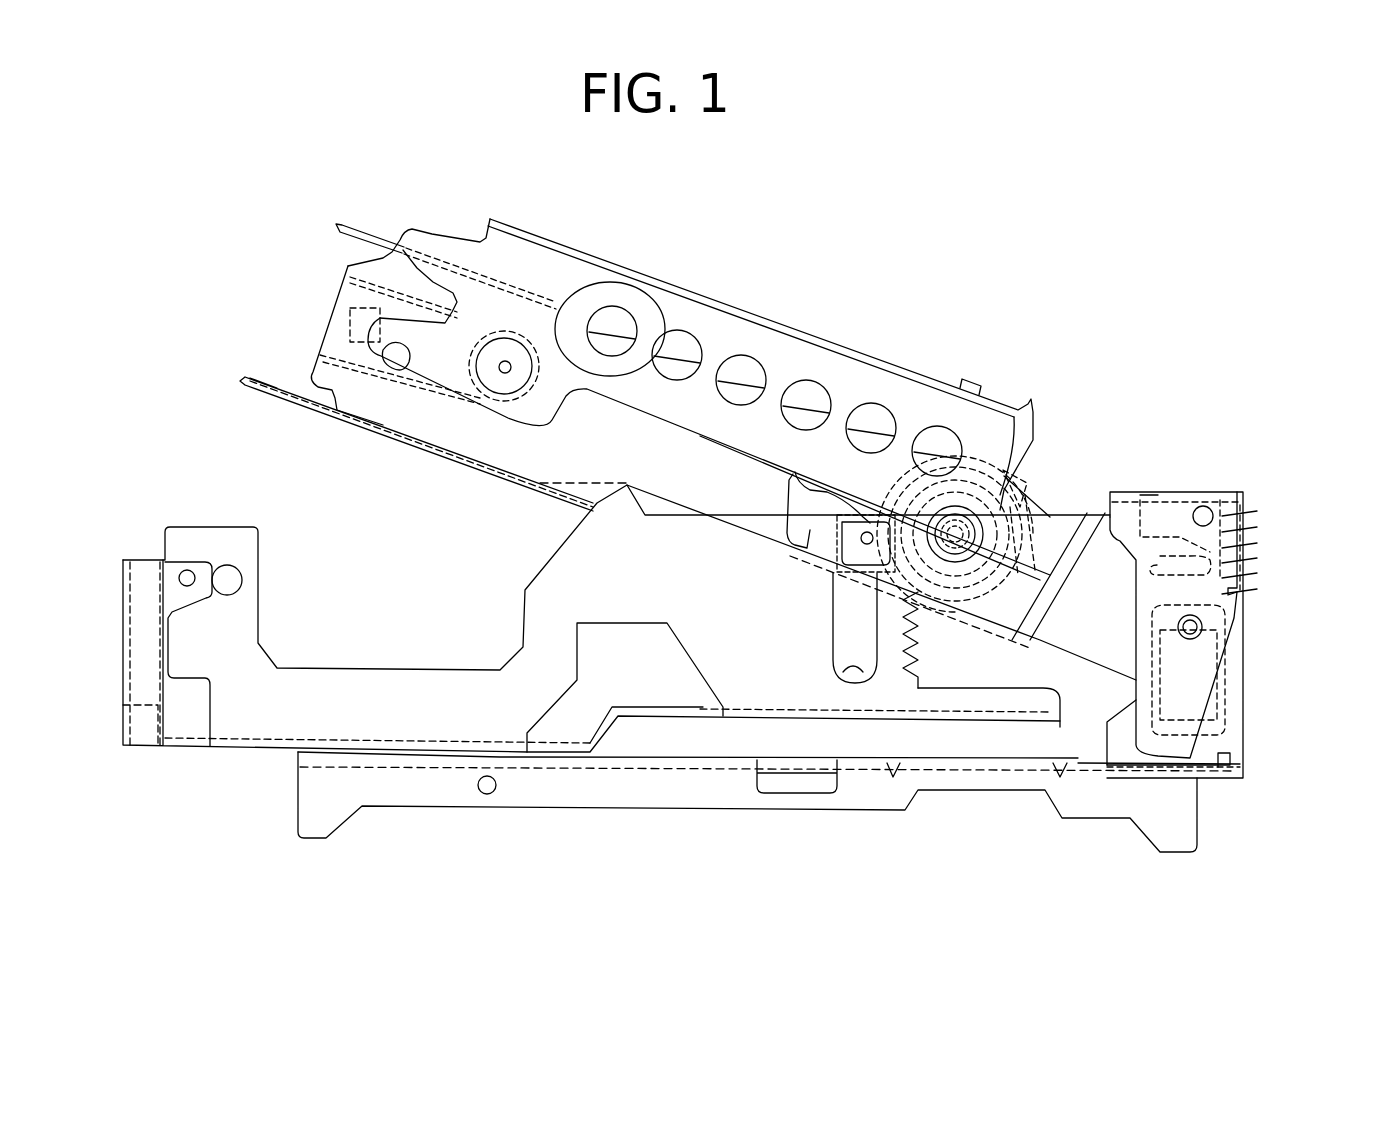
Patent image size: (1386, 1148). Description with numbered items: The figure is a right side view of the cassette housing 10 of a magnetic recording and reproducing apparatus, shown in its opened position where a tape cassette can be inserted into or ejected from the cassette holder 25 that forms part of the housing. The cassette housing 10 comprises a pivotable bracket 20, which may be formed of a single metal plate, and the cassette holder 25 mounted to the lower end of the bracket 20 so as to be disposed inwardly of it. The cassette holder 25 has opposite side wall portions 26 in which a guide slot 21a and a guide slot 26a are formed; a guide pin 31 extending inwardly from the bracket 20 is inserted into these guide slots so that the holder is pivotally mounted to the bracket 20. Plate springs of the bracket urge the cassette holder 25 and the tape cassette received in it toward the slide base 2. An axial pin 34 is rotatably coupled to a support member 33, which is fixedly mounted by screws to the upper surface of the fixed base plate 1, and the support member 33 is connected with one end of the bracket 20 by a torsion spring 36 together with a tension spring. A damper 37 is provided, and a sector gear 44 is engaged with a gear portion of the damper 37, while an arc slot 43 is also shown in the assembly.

The fixed base plate 1 is at (620, 762).
The slide base 2 is at (228, 752).
The cassette housing 10 is at (1004, 400).
The pivotable bracket 20 is at (552, 232).
The guide slot 21a is at (985, 590).
The cassette holder 25 is at (440, 462).
The side wall portion 26 is at (548, 454).
The guide slot 26a is at (405, 352).
The guide pin 31 is at (505, 368).
The support member 33 is at (1120, 747).
The axial pin 34 is at (1203, 627).
The torsion spring 36 is at (1245, 510).
The damper 37 is at (1030, 513).
The arc slot 43 is at (857, 690).
The sector gear 44 is at (925, 660).